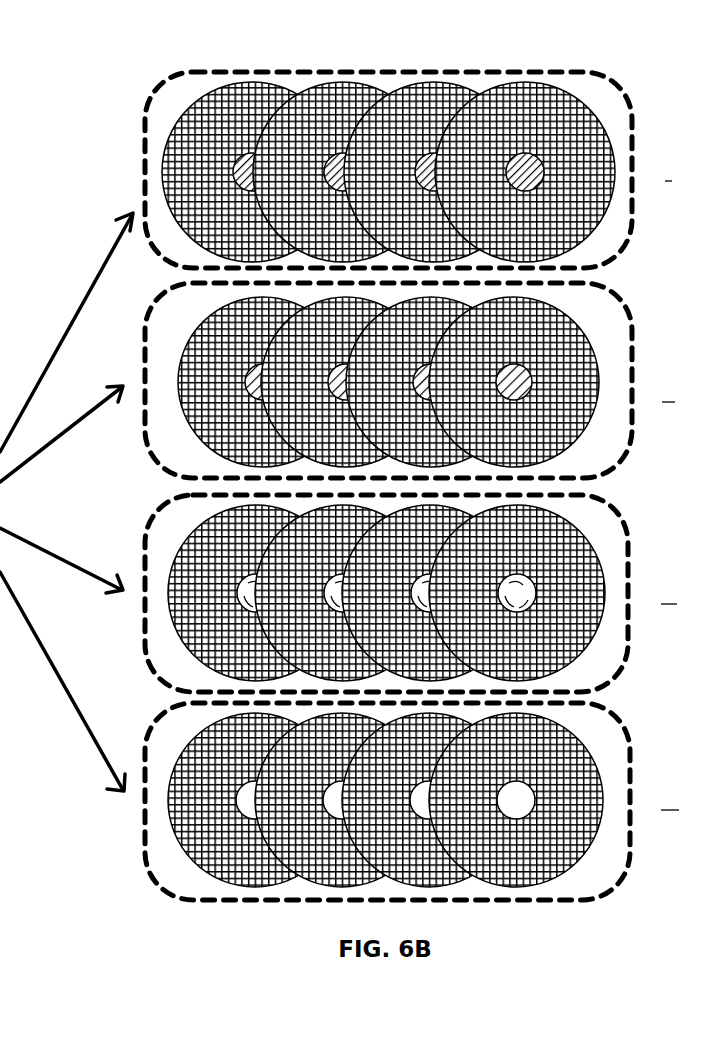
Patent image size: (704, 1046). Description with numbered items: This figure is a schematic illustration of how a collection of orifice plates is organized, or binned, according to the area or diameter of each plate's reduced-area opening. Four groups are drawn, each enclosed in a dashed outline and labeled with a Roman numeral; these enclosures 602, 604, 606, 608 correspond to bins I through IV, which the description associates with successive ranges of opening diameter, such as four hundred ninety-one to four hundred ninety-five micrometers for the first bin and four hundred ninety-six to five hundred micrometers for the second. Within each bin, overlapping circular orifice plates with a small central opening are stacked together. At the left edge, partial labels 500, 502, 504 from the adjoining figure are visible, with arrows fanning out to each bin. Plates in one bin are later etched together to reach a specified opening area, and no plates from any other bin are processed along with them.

The first group of stacked ultrasound images (I) 602 is at (586, 72).
The second group of stacked ultrasound images (II) 604 is at (603, 292).
The third group of stacked ultrasound images (III) 606 is at (603, 503).
The fourth group of stacked ultrasound images (IV) 608 is at (614, 728).
The ultrasound image 500 is at (8, 261).
The image region 502 is at (14, 374).
The image feature 504 is at (0, 312).